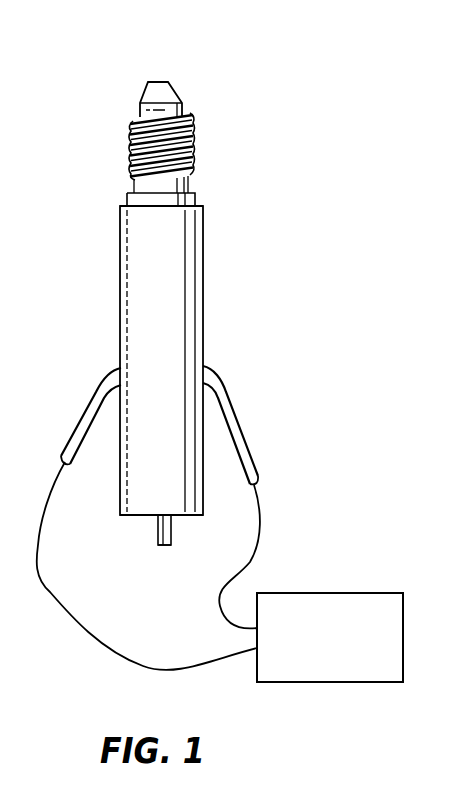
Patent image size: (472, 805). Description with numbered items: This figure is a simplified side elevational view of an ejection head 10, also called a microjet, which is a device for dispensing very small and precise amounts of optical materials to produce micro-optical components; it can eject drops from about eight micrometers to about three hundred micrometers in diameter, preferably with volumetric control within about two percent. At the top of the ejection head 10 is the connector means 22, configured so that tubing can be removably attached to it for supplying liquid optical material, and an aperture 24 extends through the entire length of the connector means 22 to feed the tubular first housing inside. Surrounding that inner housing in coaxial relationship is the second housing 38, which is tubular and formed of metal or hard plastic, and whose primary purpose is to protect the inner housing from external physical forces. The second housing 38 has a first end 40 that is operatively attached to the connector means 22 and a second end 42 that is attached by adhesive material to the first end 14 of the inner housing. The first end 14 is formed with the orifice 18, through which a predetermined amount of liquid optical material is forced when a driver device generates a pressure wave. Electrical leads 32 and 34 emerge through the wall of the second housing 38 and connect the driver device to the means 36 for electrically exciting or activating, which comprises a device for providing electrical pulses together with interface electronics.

The ejection head 10 is at (118, 82).
The first end 14 is at (172, 522).
The orifice 18 is at (165, 548).
The connector means 22 is at (130, 153).
The aperture 24 is at (171, 84).
The electrical lead 32 is at (228, 392).
The electrical lead 34 is at (92, 410).
The means for electrically exciting 36 is at (350, 593).
The second housing 38 is at (120, 340).
The first end 40 is at (120, 228).
The second end 42 is at (121, 482).